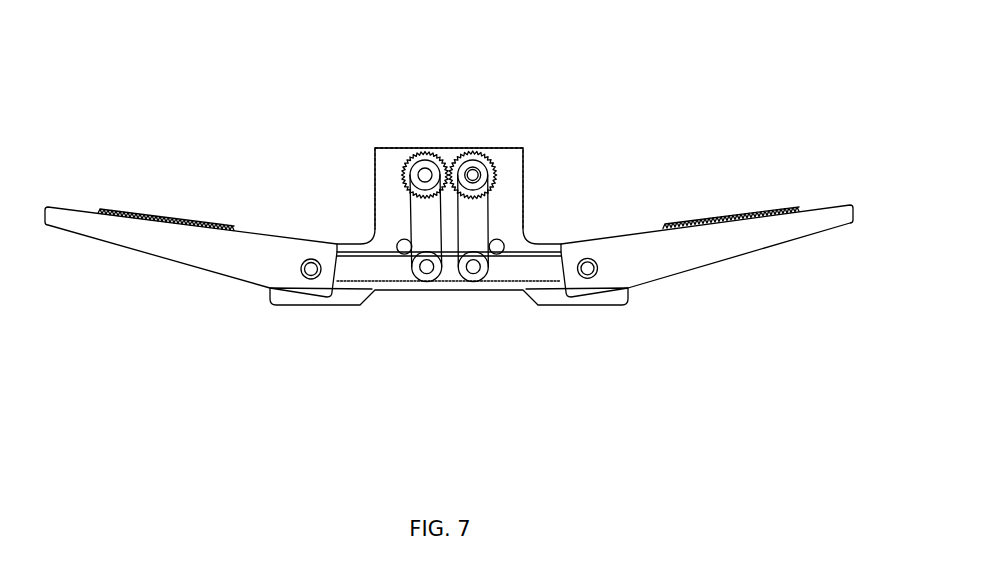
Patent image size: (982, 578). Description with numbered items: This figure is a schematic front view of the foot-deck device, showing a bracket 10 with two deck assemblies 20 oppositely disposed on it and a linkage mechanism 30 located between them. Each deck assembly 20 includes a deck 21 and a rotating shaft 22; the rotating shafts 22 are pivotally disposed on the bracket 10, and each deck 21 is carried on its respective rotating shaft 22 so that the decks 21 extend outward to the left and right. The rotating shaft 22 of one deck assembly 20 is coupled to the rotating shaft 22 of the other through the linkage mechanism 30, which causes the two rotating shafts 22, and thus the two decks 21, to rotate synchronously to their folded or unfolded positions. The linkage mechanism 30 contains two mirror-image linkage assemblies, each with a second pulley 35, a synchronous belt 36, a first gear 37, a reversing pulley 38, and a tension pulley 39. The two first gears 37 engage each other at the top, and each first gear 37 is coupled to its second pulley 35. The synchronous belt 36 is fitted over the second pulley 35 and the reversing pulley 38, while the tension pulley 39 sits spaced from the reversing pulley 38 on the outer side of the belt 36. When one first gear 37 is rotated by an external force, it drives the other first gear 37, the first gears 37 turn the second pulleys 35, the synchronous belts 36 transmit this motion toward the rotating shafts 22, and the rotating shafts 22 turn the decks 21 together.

The bracket 10 is at (440, 288).
The deck assembly 20 is at (449, 309).
The deck 21 is at (173, 250).
The rotating shaft 22 is at (307, 277).
The linkage mechanism 30 is at (477, 58).
The second pulley 35 is at (424, 162).
The synchronous belt 36 is at (408, 200).
The first gear 37 is at (467, 162).
The reversing pulley 38 is at (414, 256).
The tension pulley 39 is at (399, 240).